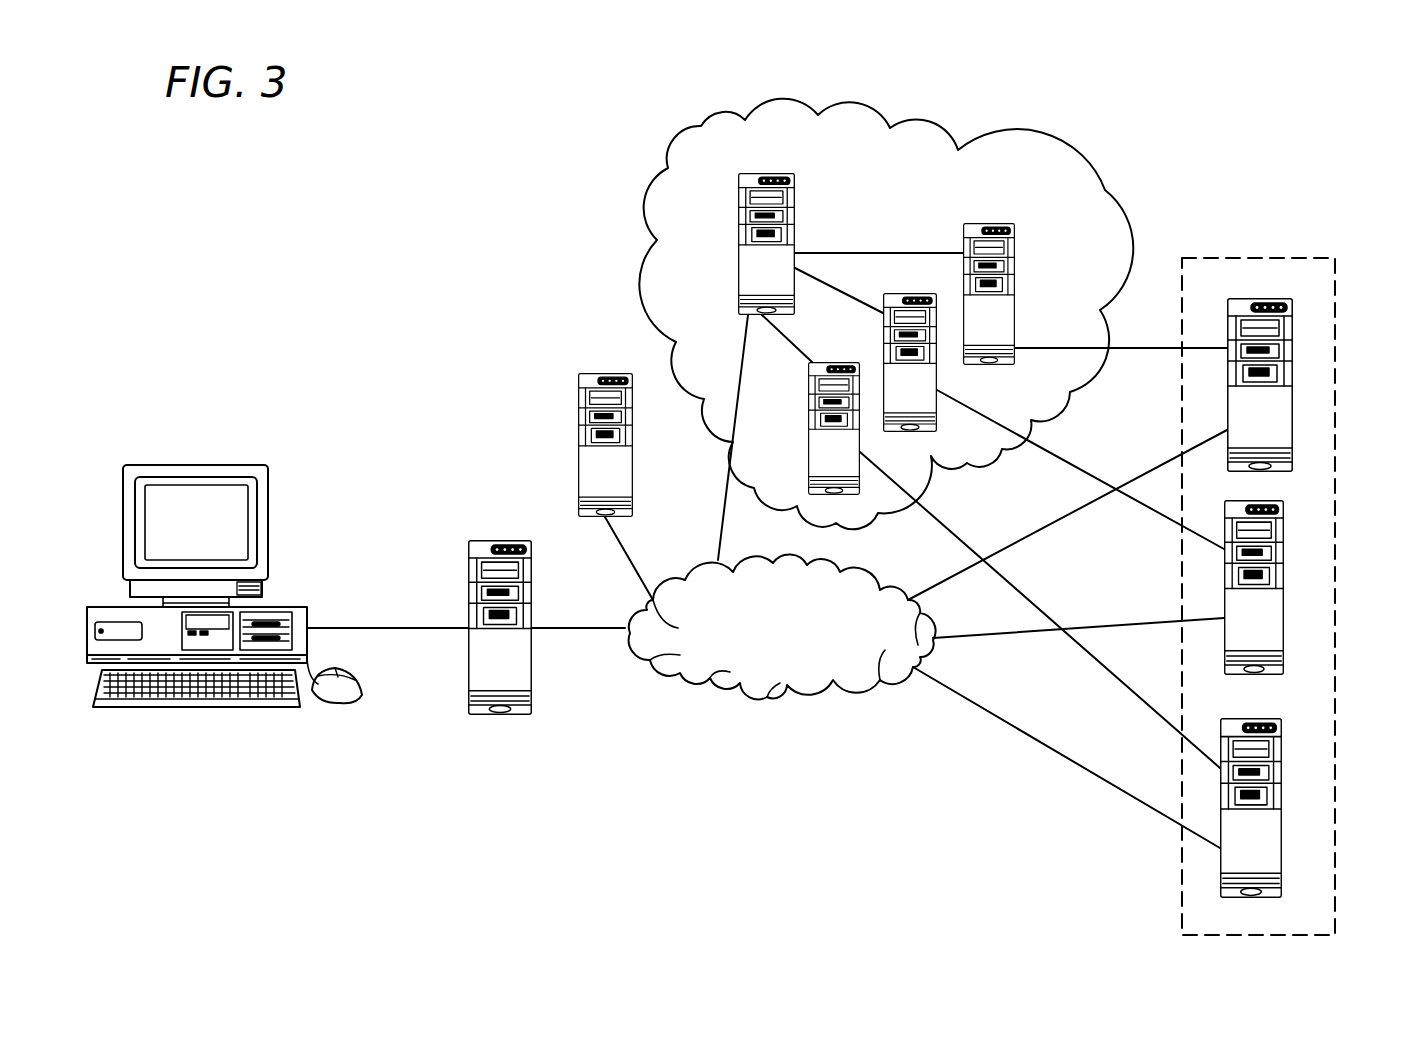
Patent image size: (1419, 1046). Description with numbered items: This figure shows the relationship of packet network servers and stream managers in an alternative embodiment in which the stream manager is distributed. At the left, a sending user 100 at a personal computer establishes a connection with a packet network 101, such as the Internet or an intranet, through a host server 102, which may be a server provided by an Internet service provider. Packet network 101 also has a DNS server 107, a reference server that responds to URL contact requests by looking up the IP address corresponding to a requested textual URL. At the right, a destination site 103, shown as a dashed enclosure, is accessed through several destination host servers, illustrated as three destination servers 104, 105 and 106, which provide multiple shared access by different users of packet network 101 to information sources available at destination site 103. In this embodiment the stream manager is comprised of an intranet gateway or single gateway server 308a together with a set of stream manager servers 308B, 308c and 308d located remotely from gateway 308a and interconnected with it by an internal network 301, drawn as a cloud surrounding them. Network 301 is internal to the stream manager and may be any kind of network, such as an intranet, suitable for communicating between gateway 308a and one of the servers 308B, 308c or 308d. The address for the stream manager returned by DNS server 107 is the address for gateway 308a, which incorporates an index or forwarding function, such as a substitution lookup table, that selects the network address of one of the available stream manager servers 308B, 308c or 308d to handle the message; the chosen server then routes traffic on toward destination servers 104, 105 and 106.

The sending user 100 is at (195, 465).
The packet network 101 is at (767, 697).
The host server 102 is at (485, 540).
The destination site 103 is at (1258, 258).
The destination server 104 is at (1293, 340).
The destination server 105 is at (1284, 545).
The destination server 106 is at (1280, 850).
The DNS server 107 is at (613, 373).
The internal network 301 is at (701, 124).
The gateway server 308a is at (795, 200).
The stream manager server 308B is at (988, 223).
The stream manager server 308c is at (927, 432).
The stream manager server 308d is at (850, 495).